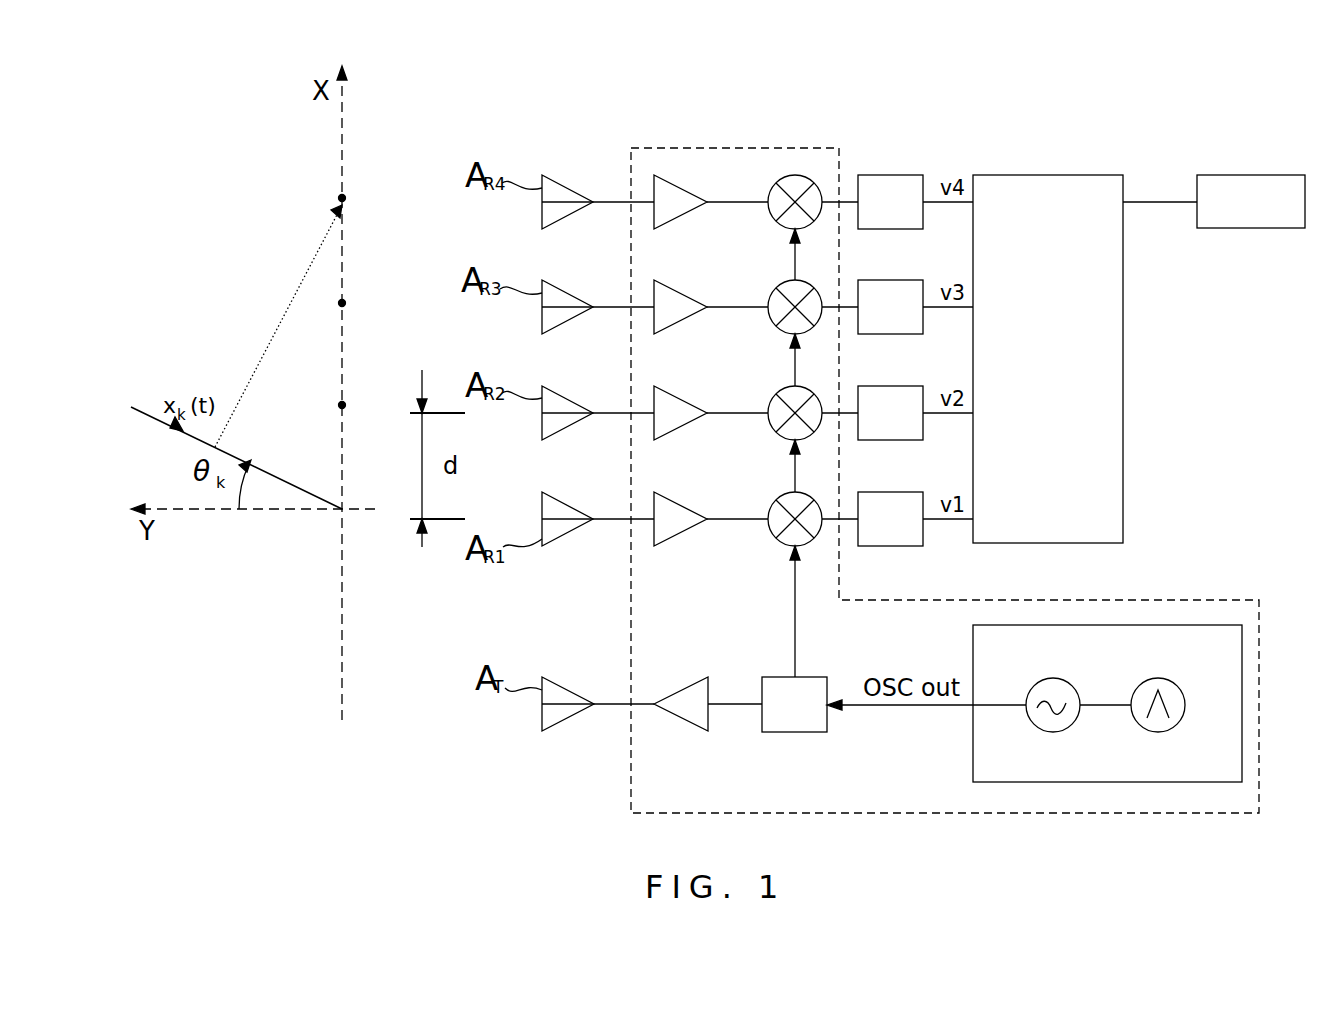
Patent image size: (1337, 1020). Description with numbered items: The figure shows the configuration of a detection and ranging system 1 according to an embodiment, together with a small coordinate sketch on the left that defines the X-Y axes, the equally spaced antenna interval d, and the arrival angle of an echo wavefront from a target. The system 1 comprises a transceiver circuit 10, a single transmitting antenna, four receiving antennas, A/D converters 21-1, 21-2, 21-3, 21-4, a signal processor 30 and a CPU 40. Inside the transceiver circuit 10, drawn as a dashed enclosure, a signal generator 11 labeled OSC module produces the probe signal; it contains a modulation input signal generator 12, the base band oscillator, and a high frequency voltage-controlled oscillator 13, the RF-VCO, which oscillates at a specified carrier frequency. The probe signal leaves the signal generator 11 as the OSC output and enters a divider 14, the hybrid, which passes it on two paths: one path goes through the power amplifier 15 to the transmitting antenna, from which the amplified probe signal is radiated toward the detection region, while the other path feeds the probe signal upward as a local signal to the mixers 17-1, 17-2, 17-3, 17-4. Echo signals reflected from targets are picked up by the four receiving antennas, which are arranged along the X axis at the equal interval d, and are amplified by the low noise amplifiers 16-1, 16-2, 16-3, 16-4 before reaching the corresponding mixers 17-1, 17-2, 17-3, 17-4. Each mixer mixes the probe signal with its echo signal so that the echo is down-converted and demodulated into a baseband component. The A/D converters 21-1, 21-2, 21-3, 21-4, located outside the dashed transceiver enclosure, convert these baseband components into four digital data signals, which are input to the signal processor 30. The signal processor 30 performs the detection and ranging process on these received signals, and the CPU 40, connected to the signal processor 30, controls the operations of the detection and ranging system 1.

The detection and ranging system 1 is at (610, 103).
The transceiver circuit 10 is at (1200, 600).
The signal generator 11 is at (973, 760).
The modulation input signal generator 12 is at (1185, 705).
The high frequency voltage-controlled oscillator 13 is at (1028, 696).
The divider 14 is at (783, 732).
The power amplifier 15 is at (681, 688).
The low noise amplifier 16-1 is at (680, 505).
The low noise amplifier 16-2 is at (680, 399).
The low noise amplifier 16-3 is at (680, 293).
The low noise amplifier 16-4 is at (680, 188).
The mixer 17-1 is at (777, 537).
The mixer 17-2 is at (777, 431).
The mixer 17-3 is at (777, 325).
The mixer 17-4 is at (777, 220).
The A/D converter 21-1 is at (885, 492).
The A/D converter 21-2 is at (885, 386).
The A/D converter 21-3 is at (885, 280).
The A/D converter 21-4 is at (885, 175).
The signal processor 30 is at (1123, 478).
The CPU 40 is at (1250, 228).